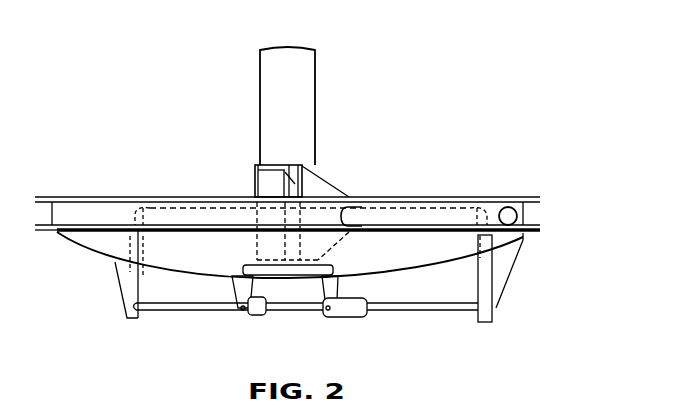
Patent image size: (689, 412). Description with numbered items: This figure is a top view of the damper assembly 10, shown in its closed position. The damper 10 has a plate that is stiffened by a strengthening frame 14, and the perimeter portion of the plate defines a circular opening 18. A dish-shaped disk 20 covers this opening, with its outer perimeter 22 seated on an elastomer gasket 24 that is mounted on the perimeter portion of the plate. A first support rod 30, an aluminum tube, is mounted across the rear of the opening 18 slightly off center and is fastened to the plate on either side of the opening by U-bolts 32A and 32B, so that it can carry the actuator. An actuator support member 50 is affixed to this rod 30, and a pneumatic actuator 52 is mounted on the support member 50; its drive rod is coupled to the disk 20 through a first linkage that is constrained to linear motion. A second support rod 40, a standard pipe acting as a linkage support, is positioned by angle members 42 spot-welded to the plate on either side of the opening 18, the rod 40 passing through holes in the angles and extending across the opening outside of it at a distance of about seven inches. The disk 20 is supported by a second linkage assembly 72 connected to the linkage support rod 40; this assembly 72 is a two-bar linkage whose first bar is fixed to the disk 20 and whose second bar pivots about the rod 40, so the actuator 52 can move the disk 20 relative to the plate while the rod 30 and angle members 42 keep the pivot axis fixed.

The damper assembly 10 is at (541, 247).
The strengthening frame 14 is at (527, 215).
The circular opening 18 is at (398, 222).
The dish-shaped disk 20 is at (425, 272).
The outer perimeter 22 is at (316, 269).
The elastomer gasket 24 is at (98, 206).
The first support rod 30 is at (515, 206).
The U-bolt 32A is at (136, 197).
The U-bolt 32B is at (473, 207).
The second support rod 40 is at (469, 322).
The angle member 42 is at (502, 278).
The actuator support member 50 is at (308, 184).
The pneumatic actuator 52 is at (293, 122).
The second linkage assembly 72 is at (372, 317).